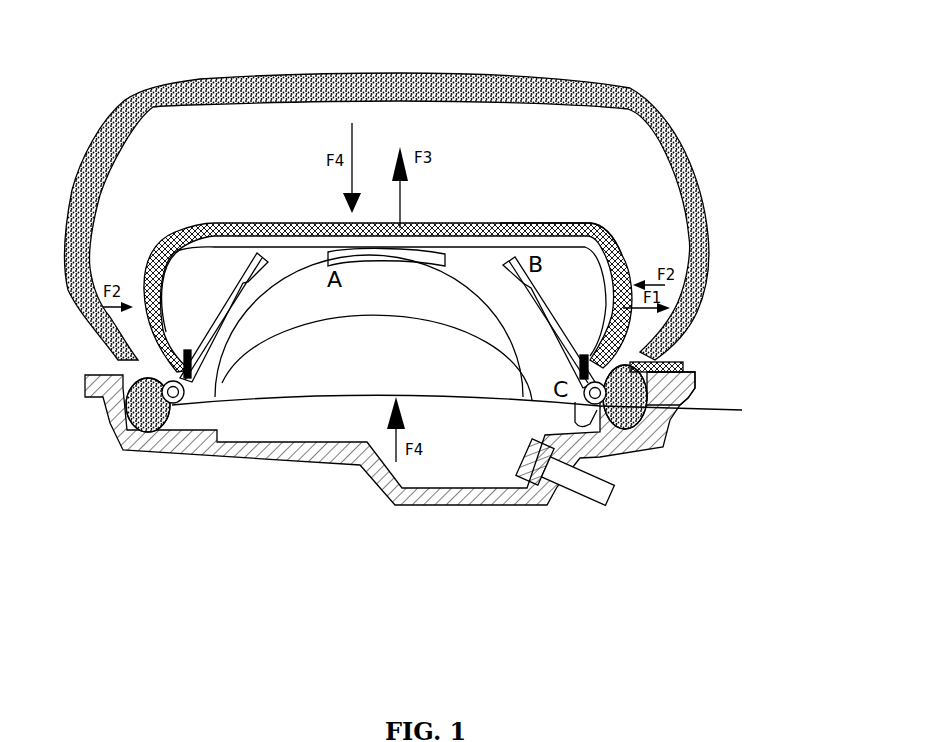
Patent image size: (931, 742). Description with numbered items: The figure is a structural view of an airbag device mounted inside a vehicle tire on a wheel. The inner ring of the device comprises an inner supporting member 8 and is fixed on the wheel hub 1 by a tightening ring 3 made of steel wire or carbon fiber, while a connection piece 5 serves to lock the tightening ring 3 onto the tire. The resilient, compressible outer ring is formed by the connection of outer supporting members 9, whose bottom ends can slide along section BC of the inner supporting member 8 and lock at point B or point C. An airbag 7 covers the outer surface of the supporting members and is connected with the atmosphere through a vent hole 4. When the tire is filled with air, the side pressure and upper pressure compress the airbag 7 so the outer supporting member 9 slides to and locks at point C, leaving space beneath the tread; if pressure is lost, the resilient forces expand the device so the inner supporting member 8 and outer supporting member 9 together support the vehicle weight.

The wheel hub 1 is at (552, 505).
The tightening ring 3 is at (781, 410).
The vent hole 4 is at (680, 363).
The connection piece 5 is at (655, 360).
The airbag 7 is at (490, 222).
The inner supporting member 8 is at (503, 262).
The outer supporting member 9 is at (592, 222).